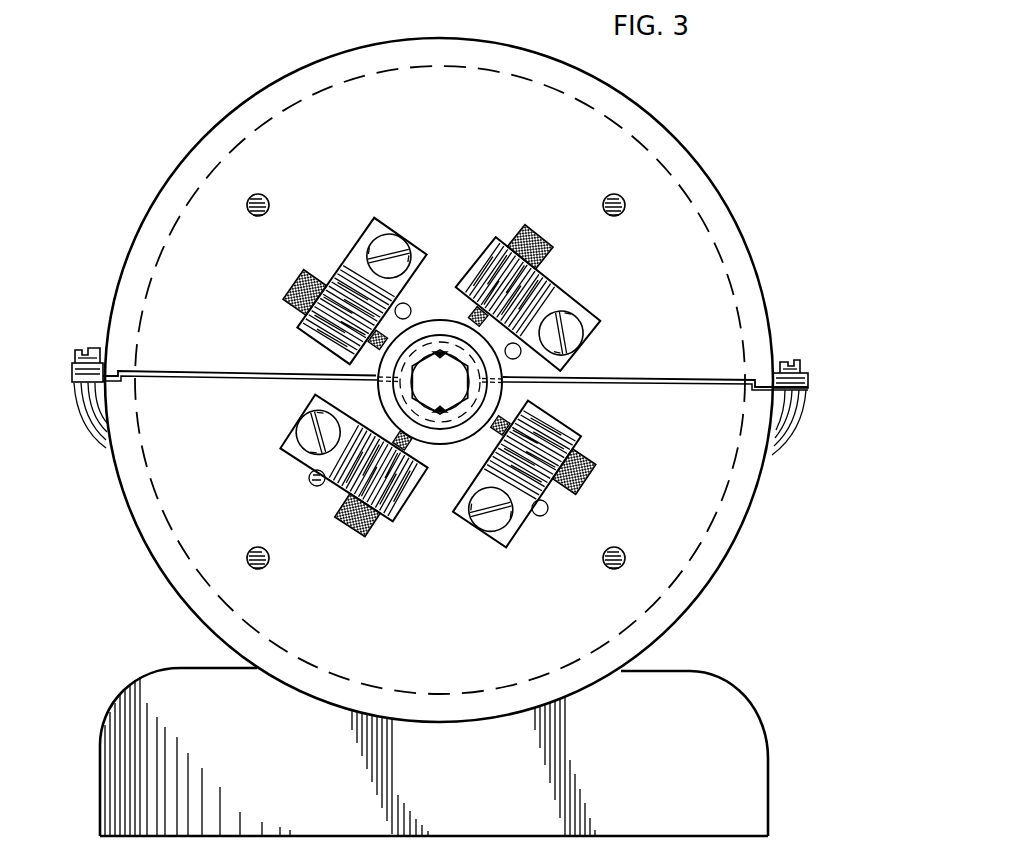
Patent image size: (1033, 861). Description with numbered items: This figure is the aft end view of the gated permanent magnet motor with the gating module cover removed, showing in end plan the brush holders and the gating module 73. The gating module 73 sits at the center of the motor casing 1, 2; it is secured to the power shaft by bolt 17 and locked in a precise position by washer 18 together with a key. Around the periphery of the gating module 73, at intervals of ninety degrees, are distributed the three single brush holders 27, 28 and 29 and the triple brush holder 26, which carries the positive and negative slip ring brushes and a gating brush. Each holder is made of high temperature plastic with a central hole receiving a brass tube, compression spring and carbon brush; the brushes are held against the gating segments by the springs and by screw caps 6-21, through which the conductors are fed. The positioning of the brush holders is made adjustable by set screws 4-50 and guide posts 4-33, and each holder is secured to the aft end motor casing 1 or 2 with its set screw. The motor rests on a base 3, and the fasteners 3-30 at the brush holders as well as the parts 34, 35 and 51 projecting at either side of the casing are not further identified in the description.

The casing 1 is at (197, 143).
The casing 2 is at (123, 504).
The base 3 is at (673, 671).
The bolt 17 is at (445, 400).
The washer 18 is at (408, 390).
The gating module 73 is at (442, 318).
The brush holder 26 is at (550, 415).
The brush holder 27 is at (540, 274).
The brush holder 28 is at (330, 277).
The brush holder 29 is at (397, 523).
The set screw 4-50 is at (398, 245).
The screw cap 6-21 is at (290, 290).
The mounting screw 3-30 is at (300, 412).
The guide post 4-33 is at (309, 480).
The clamp block 34 is at (72, 377).
The spring shoe 35 is at (82, 420).
The terminal clip 51 is at (76, 357).